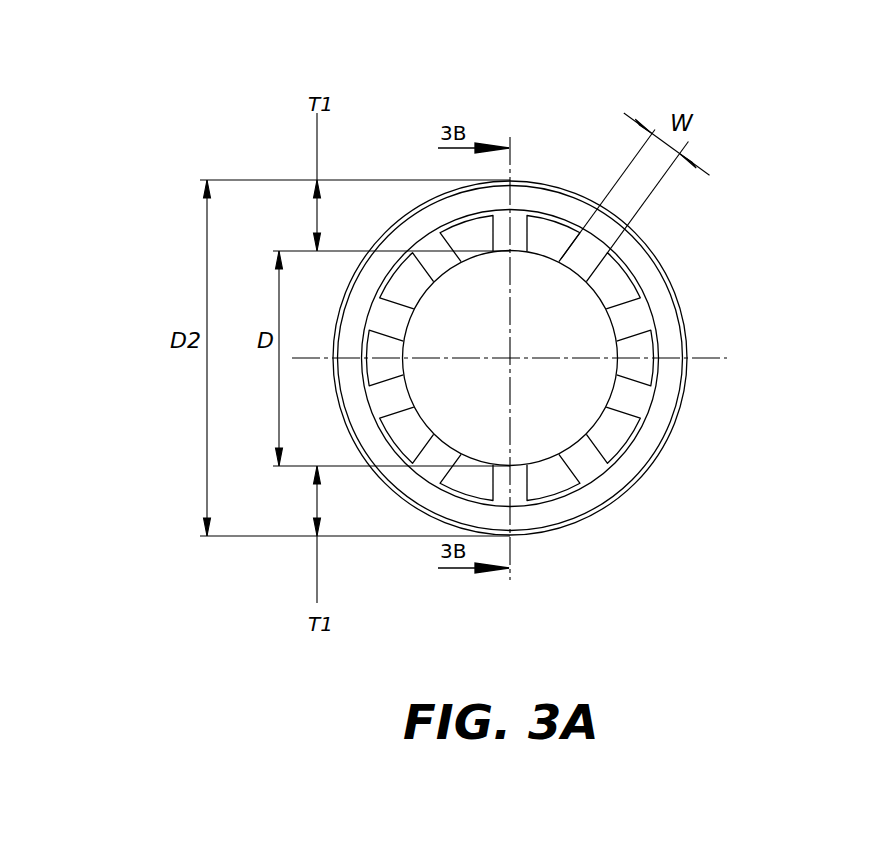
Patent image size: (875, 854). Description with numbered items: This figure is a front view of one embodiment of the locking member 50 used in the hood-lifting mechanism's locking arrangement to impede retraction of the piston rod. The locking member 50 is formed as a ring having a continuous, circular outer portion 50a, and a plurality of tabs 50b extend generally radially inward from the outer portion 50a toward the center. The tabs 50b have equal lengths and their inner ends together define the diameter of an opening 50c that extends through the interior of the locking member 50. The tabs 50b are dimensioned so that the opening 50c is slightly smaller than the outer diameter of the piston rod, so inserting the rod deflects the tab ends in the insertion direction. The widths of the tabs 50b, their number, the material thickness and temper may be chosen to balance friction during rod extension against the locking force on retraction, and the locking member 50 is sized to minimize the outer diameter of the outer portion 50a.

The locking member 50 is at (571, 316).
The outer portion 50a is at (650, 273).
The tabs 50b is at (628, 400).
The opening 50c is at (535, 390).